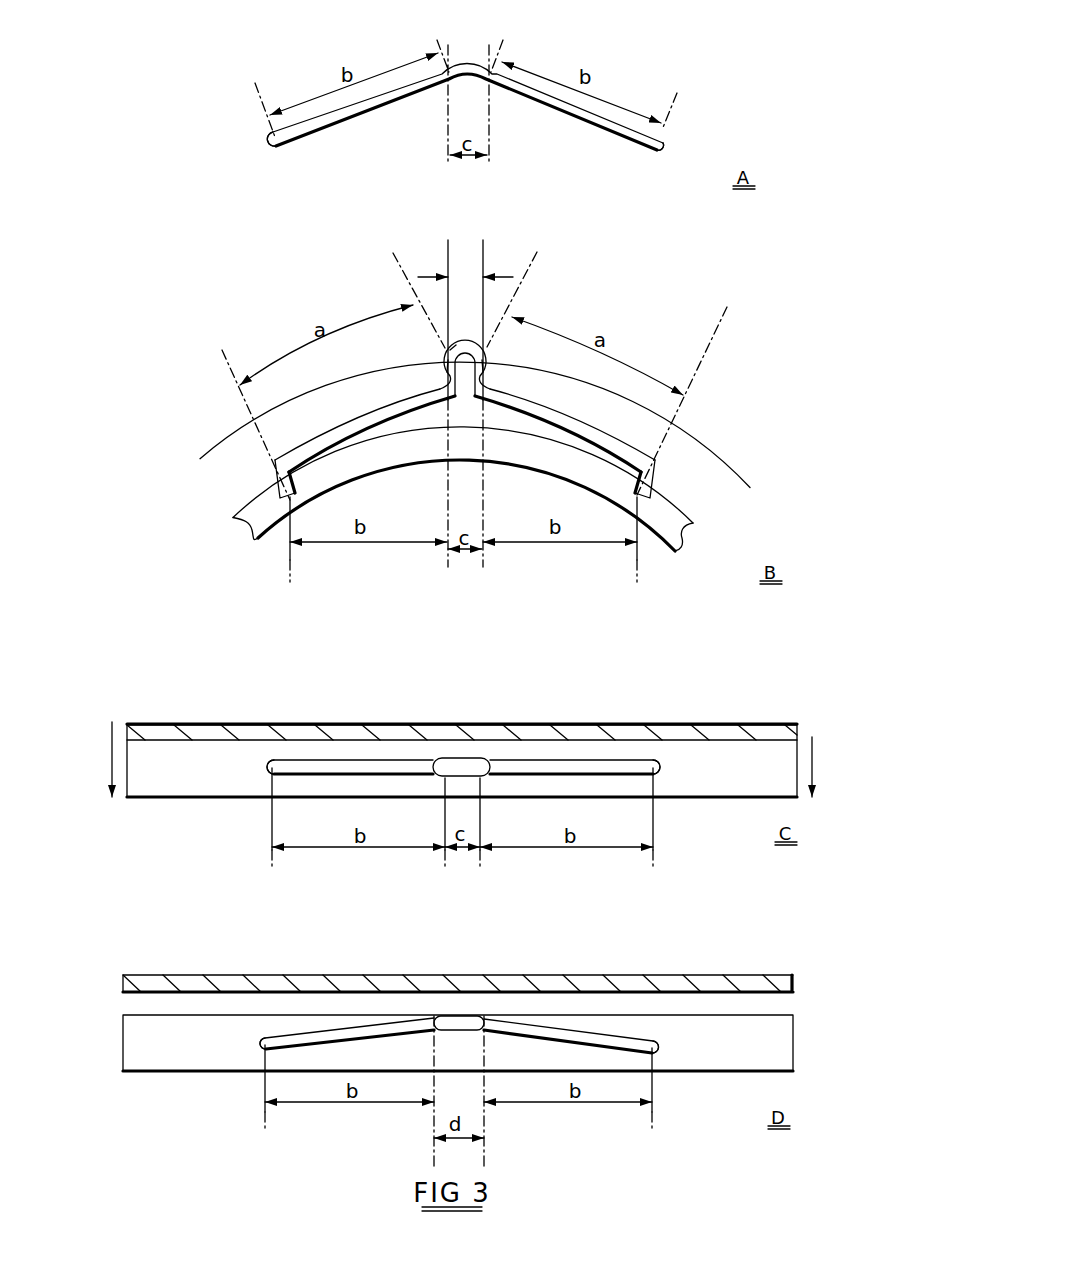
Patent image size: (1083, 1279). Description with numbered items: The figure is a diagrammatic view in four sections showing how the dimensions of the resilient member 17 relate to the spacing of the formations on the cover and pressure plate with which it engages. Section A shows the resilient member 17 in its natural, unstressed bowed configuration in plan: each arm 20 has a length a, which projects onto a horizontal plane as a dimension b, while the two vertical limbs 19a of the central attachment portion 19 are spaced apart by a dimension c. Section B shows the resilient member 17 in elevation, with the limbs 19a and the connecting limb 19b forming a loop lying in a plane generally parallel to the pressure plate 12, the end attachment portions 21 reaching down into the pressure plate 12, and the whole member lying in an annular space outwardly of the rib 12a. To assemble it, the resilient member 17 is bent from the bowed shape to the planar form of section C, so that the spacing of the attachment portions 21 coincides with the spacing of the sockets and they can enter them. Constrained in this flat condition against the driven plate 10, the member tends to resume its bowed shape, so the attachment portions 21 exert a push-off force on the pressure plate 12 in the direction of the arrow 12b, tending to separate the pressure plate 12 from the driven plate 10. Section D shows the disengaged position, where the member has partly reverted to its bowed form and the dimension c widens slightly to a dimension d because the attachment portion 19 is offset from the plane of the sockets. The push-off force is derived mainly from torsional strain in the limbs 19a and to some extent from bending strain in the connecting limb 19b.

The driven plate 10 is at (741, 735).
The pressure plate 12 is at (718, 474).
The rib 12a is at (684, 550).
The arrow 12b is at (110, 767).
The resilient member 17 is at (553, 357).
The attachment portion 19 is at (469, 80).
The vertical limbs 19a is at (445, 355).
The connecting limb 19b is at (452, 348).
The arm 20 is at (353, 112).
The attachment portions 21 is at (271, 145).